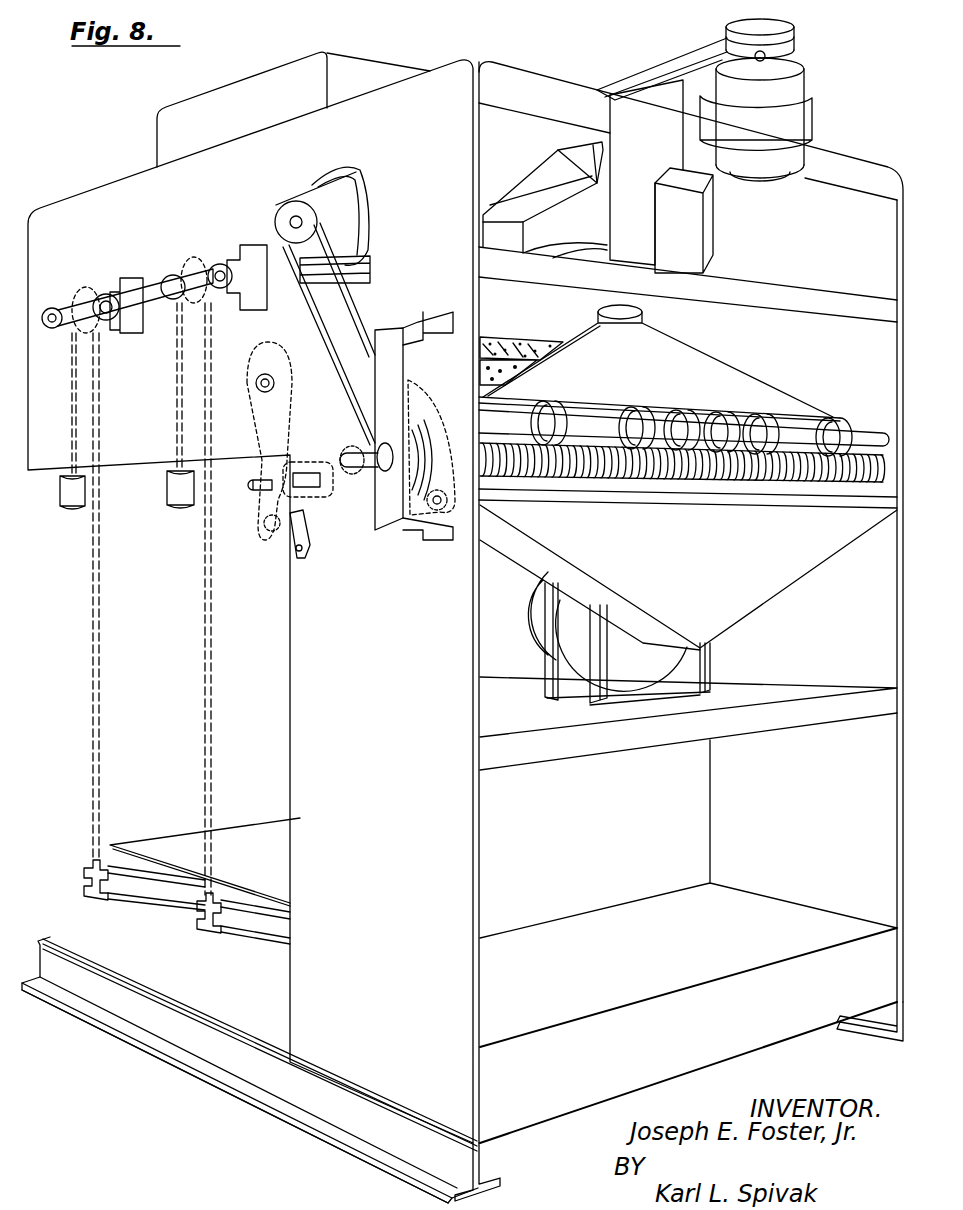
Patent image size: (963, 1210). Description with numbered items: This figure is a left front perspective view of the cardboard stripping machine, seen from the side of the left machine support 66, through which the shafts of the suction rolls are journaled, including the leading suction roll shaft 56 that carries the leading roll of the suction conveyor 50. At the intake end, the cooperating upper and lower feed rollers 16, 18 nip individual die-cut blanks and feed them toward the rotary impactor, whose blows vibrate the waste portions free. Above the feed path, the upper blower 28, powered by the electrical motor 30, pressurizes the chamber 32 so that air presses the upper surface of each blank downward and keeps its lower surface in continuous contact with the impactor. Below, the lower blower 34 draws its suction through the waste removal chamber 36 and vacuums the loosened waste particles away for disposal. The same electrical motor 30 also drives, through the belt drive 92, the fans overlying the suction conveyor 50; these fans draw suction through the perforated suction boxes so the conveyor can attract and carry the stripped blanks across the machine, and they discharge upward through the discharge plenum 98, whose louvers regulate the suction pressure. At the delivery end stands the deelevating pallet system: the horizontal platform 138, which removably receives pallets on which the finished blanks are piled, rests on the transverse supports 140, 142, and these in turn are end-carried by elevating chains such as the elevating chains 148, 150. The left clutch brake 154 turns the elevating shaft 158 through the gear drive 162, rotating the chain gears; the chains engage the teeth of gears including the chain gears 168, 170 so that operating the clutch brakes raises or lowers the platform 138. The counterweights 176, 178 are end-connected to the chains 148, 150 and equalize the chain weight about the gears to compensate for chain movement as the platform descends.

The upper feed roller 16 is at (846, 421).
The lower feed roller 18 is at (818, 474).
The upper blower 28 is at (547, 230).
The electrical motor 30 is at (790, 91).
The chamber 32 is at (705, 366).
The lower blower 34 is at (543, 620).
The waste removal chamber 36 is at (780, 575).
The suction conveyor 50 is at (538, 346).
The leading suction roll shaft 56 is at (258, 376).
The left machine support 66 is at (404, 129).
The belt drive 92 is at (683, 56).
The discharge plenum 98 is at (269, 78).
The horizontal platform 138 is at (185, 856).
The transverse support 140 is at (250, 926).
The transverse support 142 is at (120, 894).
The elevating chain 148 is at (213, 748).
The elevating chain 150 is at (100, 720).
The left clutch brake 154 is at (52, 307).
The elevating shaft 158 is at (141, 278).
The gear drive 162 is at (58, 330).
The chain gear 168 is at (90, 288).
The chain gear 170 is at (193, 263).
The counterweight 176 is at (72, 497).
The counterweight 178 is at (180, 496).